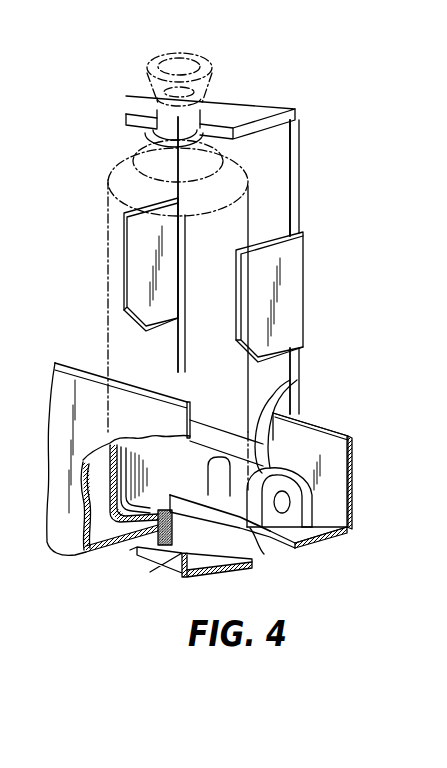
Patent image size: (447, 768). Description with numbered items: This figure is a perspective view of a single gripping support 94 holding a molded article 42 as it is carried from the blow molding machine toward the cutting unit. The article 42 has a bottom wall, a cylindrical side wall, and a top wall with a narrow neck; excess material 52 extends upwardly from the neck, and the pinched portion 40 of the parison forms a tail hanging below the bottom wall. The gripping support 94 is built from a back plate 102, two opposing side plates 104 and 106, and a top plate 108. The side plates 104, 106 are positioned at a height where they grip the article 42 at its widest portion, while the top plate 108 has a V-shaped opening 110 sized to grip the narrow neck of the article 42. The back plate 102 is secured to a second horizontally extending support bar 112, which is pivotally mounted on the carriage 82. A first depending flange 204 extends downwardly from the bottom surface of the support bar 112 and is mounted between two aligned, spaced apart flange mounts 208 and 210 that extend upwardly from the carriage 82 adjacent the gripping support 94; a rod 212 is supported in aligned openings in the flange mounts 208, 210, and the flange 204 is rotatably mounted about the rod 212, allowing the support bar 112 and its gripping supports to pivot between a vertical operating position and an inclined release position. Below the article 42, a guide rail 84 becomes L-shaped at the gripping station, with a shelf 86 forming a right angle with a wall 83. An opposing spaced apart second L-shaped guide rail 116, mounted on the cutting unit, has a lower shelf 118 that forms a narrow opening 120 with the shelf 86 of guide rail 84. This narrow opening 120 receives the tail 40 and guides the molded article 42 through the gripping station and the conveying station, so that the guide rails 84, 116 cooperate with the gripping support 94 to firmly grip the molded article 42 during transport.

The pinched portion 40 is at (140, 553).
The article 42 is at (130, 345).
The excess material 52 is at (177, 54).
The carriage 82 is at (258, 545).
The wall 83 is at (346, 450).
The guide rail 84 is at (338, 523).
The shelf 86 is at (312, 547).
The gripping support 94 is at (277, 149).
The back plate 102 is at (277, 173).
The side plate 104 is at (145, 238).
The side plate 106 is at (283, 262).
The top plate 108 is at (248, 108).
The V-shaped opening 110 is at (201, 115).
The second support bar 112 is at (276, 400).
The second L-shaped guide rail 116 is at (70, 546).
The lower shelf 118 is at (218, 562).
The narrow opening 120 is at (255, 548).
The first depending flange 204 is at (237, 468).
The flange mount 208 is at (340, 537).
The flange mount 210 is at (215, 465).
The rod 212 is at (289, 501).